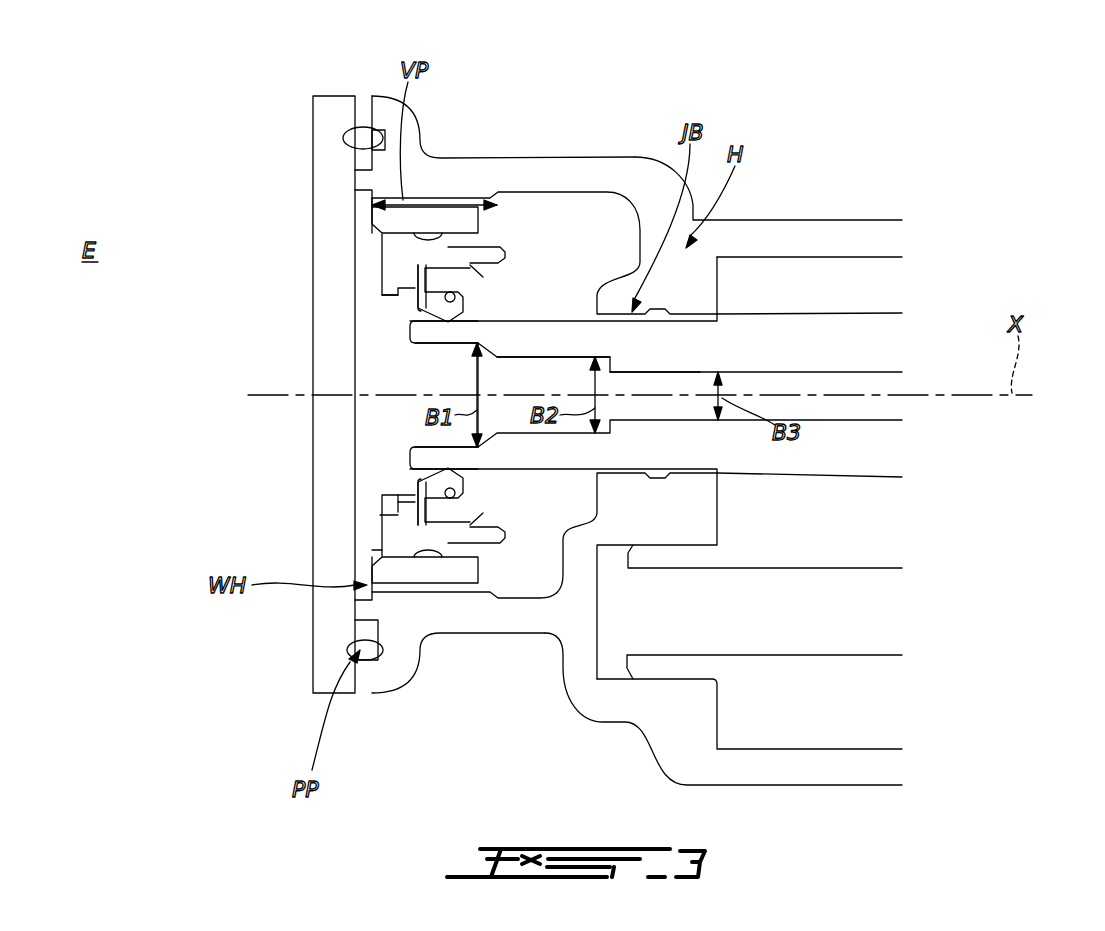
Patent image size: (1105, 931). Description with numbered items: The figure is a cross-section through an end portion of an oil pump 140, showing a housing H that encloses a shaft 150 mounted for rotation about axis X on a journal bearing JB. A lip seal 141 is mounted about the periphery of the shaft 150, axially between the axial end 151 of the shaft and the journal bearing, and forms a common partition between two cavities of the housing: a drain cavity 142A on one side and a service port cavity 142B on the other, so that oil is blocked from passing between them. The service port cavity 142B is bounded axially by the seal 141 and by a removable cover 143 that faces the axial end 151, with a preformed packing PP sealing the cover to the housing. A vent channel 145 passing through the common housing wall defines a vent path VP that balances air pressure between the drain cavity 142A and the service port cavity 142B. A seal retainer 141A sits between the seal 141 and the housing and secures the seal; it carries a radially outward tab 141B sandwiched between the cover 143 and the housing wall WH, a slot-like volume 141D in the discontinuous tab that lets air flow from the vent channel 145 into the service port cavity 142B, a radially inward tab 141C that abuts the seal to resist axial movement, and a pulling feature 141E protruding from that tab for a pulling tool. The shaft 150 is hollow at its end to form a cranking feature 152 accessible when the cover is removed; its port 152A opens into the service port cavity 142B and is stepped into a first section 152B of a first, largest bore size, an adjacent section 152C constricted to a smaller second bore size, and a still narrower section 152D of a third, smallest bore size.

The pump 140 is at (980, 143).
The seal 141 is at (466, 267).
The seal retainer 141A is at (464, 231).
The tab 141B is at (370, 550).
The tab 141C is at (400, 510).
The volume 141D is at (354, 212).
The pulling feature 141E is at (385, 483).
The drain cavity 142A is at (577, 243).
The service port cavity 142B is at (380, 372).
The cover 143 is at (328, 595).
The vent channel 145 is at (436, 185).
The shaft 150 is at (536, 462).
The axial end 151 is at (421, 484).
The cranking feature 152 is at (509, 417).
The port 152A is at (406, 423).
The section 152B is at (462, 383).
The section 152C is at (567, 383).
The section 152D is at (658, 405).